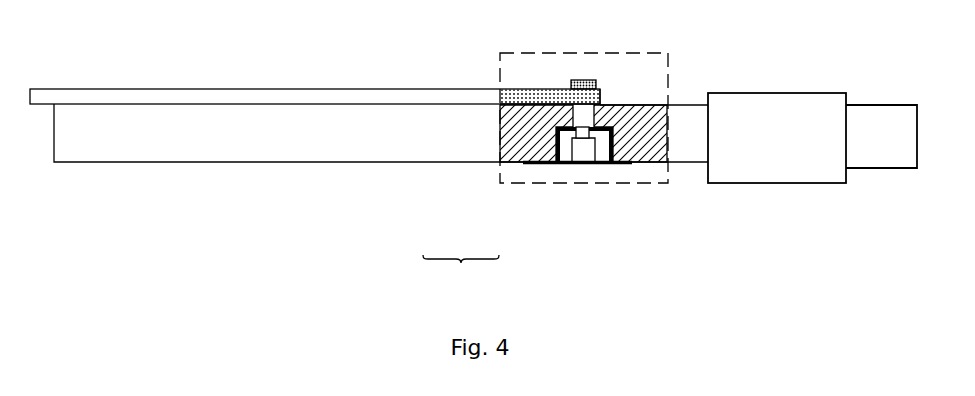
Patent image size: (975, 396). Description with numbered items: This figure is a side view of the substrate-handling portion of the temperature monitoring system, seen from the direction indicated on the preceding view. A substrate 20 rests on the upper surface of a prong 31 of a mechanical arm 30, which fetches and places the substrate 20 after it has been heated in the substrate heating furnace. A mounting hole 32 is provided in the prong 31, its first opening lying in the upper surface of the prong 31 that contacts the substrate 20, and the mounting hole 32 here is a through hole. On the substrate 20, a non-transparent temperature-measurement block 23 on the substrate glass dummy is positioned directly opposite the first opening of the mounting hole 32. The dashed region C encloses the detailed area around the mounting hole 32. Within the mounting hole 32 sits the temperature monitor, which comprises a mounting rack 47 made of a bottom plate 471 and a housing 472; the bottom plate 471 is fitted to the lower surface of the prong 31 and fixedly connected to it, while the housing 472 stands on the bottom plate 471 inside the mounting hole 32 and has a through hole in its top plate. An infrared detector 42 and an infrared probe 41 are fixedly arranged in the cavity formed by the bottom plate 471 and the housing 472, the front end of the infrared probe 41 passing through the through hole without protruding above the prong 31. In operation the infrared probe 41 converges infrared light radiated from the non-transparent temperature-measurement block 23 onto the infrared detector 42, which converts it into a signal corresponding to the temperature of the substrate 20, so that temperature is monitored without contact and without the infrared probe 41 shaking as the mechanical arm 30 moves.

The substrate 20 is at (200, 99).
The prong 31 is at (262, 136).
The mechanical arm 30 is at (748, 127).
The non-transparent temperature-measurement block 23 is at (583, 81).
The mounting hole 32 is at (602, 95).
The region C is at (513, 52).
The infrared probe 41 is at (590, 133).
The infrared detector 42 is at (582, 140).
The bottom plate 471 is at (525, 163).
The housing 472 is at (538, 163).
The mounting rack 47 is at (461, 271).